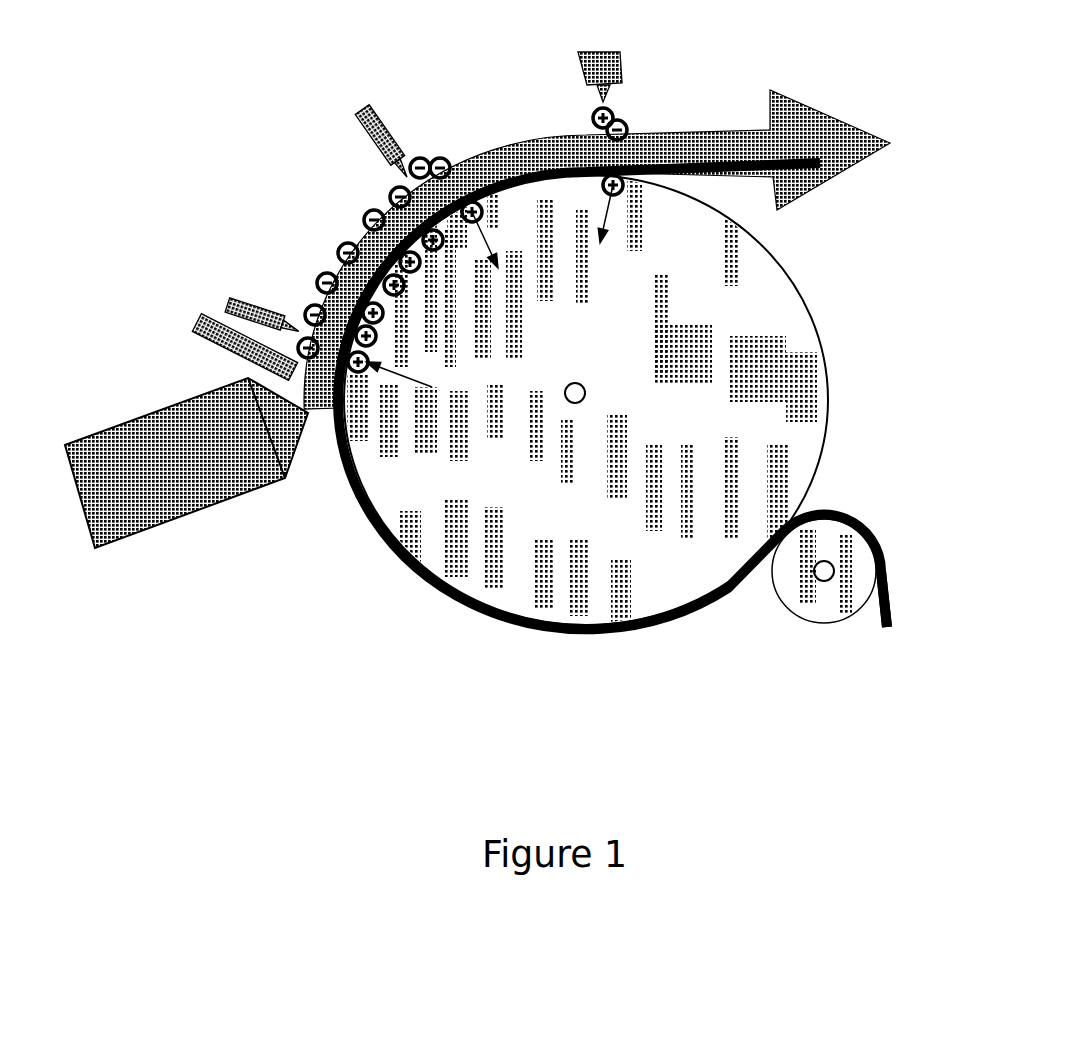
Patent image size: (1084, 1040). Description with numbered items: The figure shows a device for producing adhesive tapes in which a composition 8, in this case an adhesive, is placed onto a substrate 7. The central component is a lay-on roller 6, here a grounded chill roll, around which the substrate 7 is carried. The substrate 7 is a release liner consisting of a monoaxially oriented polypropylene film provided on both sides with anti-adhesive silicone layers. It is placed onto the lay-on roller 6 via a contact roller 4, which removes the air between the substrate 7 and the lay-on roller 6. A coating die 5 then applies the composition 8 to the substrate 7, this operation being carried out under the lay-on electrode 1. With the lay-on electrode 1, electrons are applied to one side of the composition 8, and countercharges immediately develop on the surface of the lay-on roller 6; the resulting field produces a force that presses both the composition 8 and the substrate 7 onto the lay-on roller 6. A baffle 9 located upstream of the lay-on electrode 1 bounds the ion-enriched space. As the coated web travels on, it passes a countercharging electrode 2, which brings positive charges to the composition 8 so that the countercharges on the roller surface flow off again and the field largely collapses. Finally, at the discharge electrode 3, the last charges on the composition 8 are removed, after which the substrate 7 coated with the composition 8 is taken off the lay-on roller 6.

The lay-on electrode 1 is at (233, 295).
The countercharging electrode 2 is at (366, 127).
The discharge electrode 3 is at (603, 65).
The contact roller 4 is at (810, 587).
The coating die 5 is at (190, 485).
The lay-on roller 6 is at (723, 342).
The substrate 7 is at (888, 597).
The composition 8 is at (790, 147).
The baffle 9 is at (203, 330).